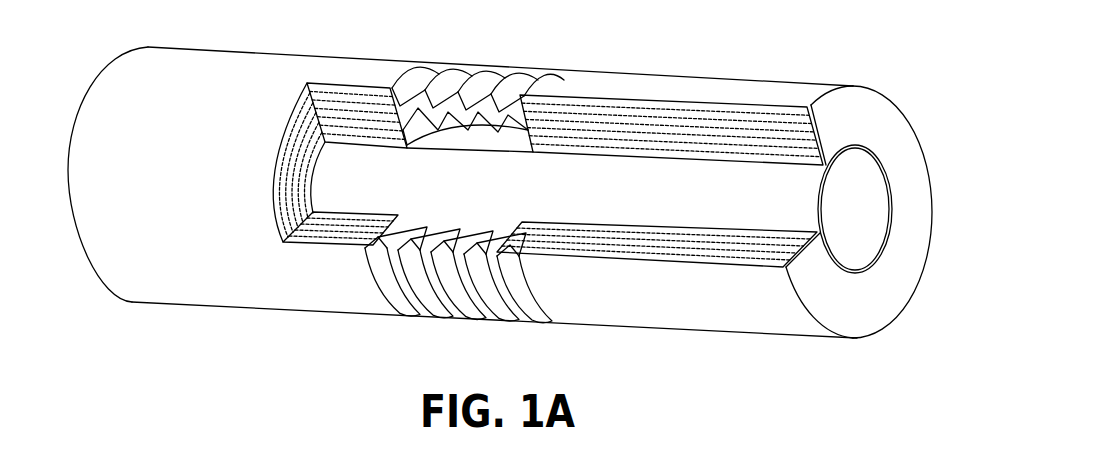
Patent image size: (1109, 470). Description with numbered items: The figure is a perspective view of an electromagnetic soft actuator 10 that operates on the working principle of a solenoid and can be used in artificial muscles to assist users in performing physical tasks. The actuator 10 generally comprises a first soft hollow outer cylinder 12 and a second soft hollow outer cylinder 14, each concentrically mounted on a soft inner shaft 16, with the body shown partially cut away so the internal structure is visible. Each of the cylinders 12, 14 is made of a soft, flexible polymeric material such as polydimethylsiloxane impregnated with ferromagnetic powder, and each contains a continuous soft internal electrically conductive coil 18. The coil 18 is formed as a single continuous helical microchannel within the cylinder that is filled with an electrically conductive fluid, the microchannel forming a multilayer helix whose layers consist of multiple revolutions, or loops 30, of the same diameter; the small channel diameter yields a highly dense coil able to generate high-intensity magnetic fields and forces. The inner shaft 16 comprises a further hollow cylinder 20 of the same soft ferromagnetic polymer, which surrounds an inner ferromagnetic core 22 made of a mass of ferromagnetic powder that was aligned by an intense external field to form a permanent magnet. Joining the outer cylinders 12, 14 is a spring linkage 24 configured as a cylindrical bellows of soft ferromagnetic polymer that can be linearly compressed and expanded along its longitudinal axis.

The electromagnetic soft actuator 10 is at (945, 60).
The first soft hollow outer cylinder 12 is at (242, 62).
The second soft hollow outer cylinder 14 is at (677, 80).
The soft inner shaft 16 is at (898, 197).
The soft internal electrically conductive coil 18 is at (346, 82).
The hollow cylinder 20 is at (888, 222).
The inner ferromagnetic core 22 is at (863, 232).
The spring linkage 24 is at (492, 58).
The loops 30 is at (578, 222).